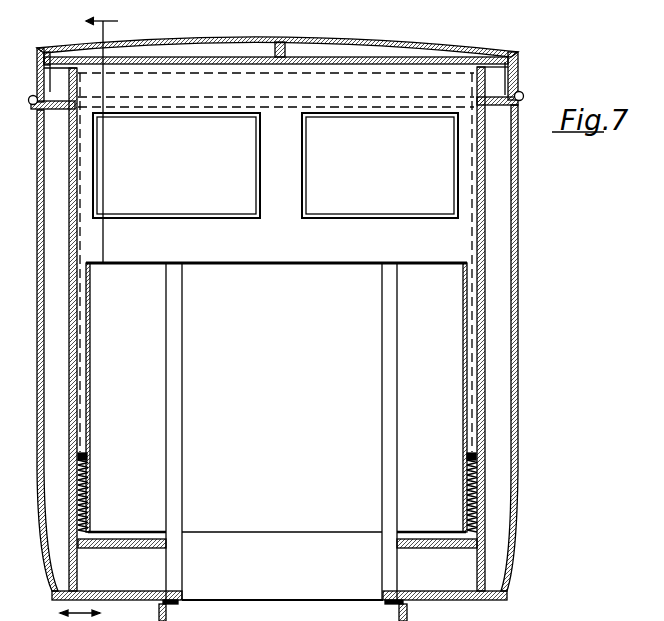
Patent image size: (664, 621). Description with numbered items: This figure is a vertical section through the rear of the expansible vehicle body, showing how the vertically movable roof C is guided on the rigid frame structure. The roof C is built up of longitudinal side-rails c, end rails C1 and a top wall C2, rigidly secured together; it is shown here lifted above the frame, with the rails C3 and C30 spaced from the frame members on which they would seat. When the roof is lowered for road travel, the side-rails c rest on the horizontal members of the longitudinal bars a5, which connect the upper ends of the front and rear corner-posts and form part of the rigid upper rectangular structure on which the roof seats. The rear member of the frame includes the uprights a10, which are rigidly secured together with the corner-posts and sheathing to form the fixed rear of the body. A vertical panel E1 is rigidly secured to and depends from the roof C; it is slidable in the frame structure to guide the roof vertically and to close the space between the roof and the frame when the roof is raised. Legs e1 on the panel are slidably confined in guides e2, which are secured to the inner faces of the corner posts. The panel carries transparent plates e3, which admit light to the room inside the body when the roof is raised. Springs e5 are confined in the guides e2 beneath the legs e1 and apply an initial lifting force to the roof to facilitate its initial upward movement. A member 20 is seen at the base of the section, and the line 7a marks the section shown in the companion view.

The roof C is at (274, 314).
The cover top (C') C1 is at (481, 43).
The longitudinal side-rail c is at (519, 68).
The cover post / bottom plate C2 is at (342, 38).
The cover cross bar C3 is at (364, 61).
The bottom plate C30 is at (450, 606).
The longitudinal bar a5 is at (538, 74).
The upright a10 is at (174, 469).
The slide member (e') e1 is at (82, 356).
The guide e2 is at (86, 318).
The transparent plate e3 is at (275, 165).
The spring e5 is at (90, 492).
The element E' E1 is at (414, 237).
The stud 20 is at (407, 610).
The section line 7a- 7a is at (89, 311).